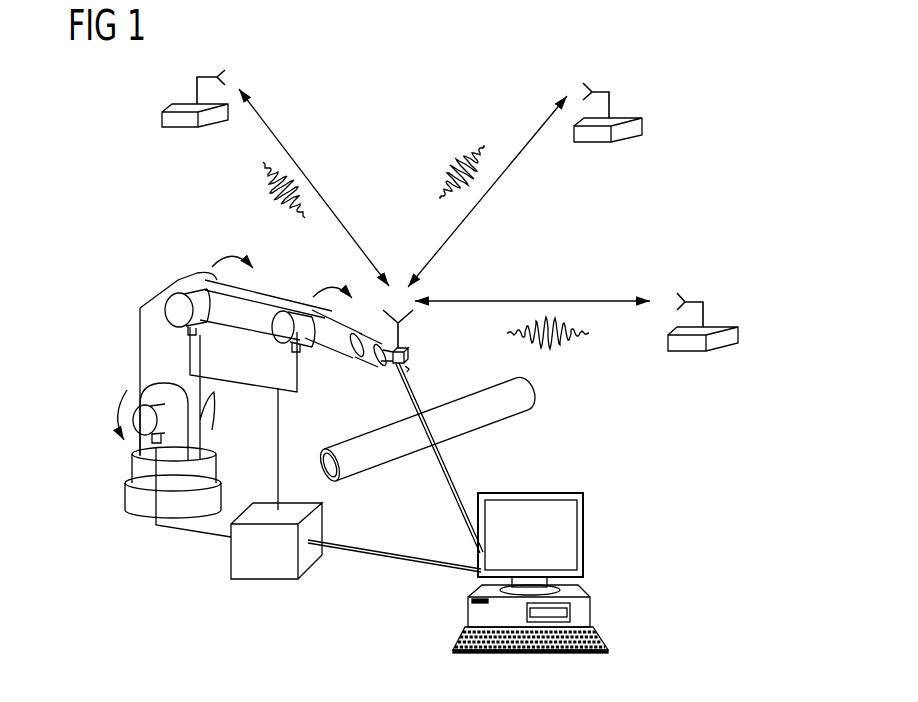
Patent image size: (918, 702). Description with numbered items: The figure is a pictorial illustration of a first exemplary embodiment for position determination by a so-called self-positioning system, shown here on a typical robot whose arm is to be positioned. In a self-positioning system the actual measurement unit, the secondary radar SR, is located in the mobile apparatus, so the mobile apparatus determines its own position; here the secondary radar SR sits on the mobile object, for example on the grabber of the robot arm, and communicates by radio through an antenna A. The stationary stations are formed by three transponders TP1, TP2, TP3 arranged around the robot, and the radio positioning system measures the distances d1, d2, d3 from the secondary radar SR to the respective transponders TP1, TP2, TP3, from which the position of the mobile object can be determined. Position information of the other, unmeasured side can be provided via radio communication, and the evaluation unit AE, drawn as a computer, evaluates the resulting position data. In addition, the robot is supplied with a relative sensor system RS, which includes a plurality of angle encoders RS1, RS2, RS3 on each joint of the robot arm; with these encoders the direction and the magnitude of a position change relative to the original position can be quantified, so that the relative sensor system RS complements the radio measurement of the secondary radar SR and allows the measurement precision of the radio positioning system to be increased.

The transponder TP1 is at (716, 322).
The transponder TP2 is at (618, 112).
The transponder TP3 is at (177, 98).
The distance d1 is at (532, 311).
The distance d2 is at (487, 191).
The distance d3 is at (314, 187).
The antenna A is at (398, 319).
The secondary radar SR is at (438, 440).
The angle encoder RS1 is at (97, 415).
The angle encoder RS2 is at (237, 249).
The angle encoder RS3 is at (330, 278).
The relative sensor system RS is at (356, 541).
The evaluation unit AE is at (530, 556).